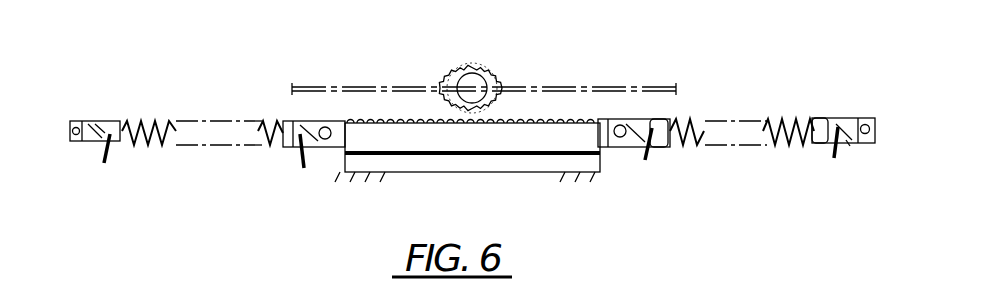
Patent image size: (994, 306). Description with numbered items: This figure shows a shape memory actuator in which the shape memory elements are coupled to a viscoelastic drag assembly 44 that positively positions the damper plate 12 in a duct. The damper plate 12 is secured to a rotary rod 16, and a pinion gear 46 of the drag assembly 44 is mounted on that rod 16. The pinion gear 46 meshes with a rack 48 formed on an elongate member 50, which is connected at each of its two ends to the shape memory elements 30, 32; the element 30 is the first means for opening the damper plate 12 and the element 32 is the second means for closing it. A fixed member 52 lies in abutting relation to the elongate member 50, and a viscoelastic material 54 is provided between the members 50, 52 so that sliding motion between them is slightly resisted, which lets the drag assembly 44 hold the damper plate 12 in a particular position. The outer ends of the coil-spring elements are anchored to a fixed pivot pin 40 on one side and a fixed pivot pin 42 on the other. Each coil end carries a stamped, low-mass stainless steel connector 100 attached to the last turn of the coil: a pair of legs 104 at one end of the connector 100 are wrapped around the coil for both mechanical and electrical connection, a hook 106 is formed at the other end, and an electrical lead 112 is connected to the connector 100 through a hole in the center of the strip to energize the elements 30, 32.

The damper plate 12 is at (648, 54).
The rod 16 is at (474, 86).
The pinion gear 46 is at (456, 66).
The elongate member 50 is at (472, 148).
The rack 48 is at (533, 118).
The fixed member 52 is at (343, 171).
The viscoelastic material 54 is at (600, 150).
The drag assembly 44 is at (497, 182).
The fixed pivot pin 40 is at (88, 121).
The electrical lead 112 is at (104, 160).
The shape memory element 30 is at (162, 120).
The shape memory element 32 is at (771, 118).
The connector 100 is at (107, 121).
The fixed pivot pin 42 is at (868, 118).
The legs 104 is at (816, 118).
The hook 106 is at (847, 141).